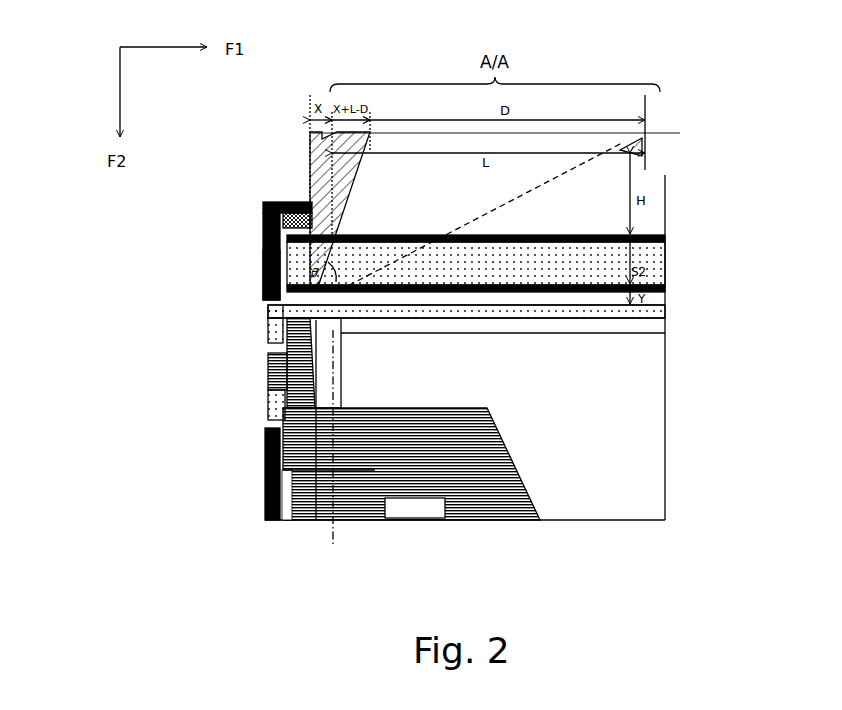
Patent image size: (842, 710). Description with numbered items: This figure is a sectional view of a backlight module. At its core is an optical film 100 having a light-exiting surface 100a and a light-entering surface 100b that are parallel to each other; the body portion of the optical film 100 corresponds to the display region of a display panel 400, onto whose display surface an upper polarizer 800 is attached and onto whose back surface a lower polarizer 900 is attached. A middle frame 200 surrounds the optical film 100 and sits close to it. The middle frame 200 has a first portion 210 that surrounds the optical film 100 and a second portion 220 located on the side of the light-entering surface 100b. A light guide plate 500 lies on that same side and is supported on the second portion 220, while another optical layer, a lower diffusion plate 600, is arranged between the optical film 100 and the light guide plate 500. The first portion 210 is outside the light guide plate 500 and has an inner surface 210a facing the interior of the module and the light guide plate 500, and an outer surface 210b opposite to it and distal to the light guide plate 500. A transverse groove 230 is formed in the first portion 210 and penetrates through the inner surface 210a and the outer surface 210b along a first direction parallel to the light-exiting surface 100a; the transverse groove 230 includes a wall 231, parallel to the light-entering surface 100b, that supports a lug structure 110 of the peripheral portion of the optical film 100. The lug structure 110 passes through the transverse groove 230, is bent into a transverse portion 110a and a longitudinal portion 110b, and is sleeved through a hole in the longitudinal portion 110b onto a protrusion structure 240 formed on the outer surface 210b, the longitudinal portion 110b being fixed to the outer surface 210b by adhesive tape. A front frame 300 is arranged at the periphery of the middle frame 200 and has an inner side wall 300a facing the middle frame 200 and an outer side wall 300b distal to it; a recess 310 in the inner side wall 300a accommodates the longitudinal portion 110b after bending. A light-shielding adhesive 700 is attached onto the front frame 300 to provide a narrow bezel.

The optical film 100 is at (390, 335).
The light-exiting surface 100a is at (592, 306).
The light-entering surface 100b is at (592, 318).
The lug structure 110 is at (147, 311).
The transverse portion 110a is at (268, 306).
The longitudinal portion 110b is at (268, 326).
The middle frame 200 is at (316, 455).
The first portion 210 is at (268, 395).
The inner surface 210a is at (308, 340).
The outer surface 210b is at (287, 348).
The second portion 220 is at (283, 468).
The transverse groove 230 is at (287, 287).
The wall 231 is at (321, 520).
The protrusion structure 240 is at (270, 364).
The front frame 300 is at (270, 200).
The inner side wall 300a is at (283, 518).
The outer side wall 300b is at (263, 497).
The recess 310 is at (283, 300).
The display panel 400 is at (648, 252).
The light guide plate 500 is at (620, 385).
The lower diffusion plate 600 is at (652, 328).
The light-shielding adhesive 700 is at (306, 200).
The upper polarizer 800 is at (665, 236).
The lower polarizer 900 is at (652, 288).